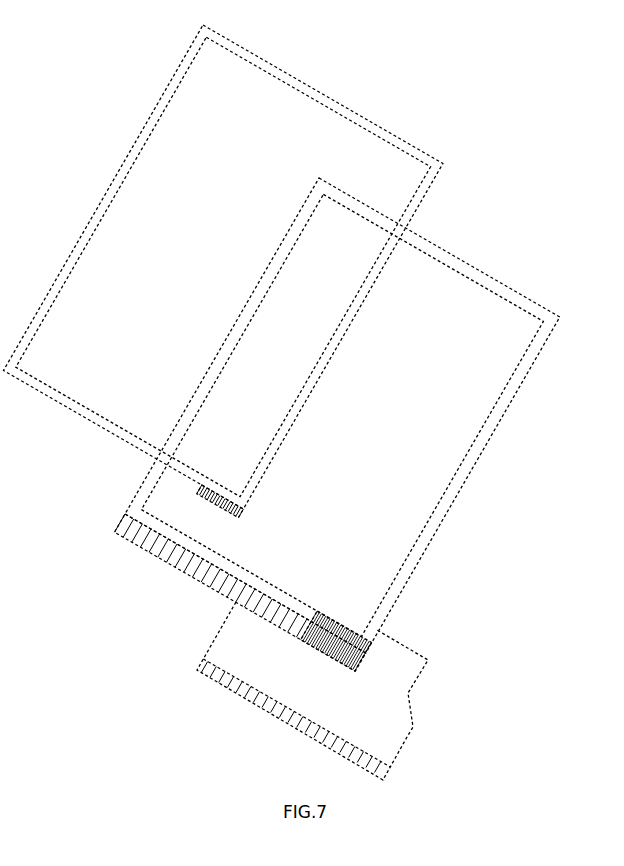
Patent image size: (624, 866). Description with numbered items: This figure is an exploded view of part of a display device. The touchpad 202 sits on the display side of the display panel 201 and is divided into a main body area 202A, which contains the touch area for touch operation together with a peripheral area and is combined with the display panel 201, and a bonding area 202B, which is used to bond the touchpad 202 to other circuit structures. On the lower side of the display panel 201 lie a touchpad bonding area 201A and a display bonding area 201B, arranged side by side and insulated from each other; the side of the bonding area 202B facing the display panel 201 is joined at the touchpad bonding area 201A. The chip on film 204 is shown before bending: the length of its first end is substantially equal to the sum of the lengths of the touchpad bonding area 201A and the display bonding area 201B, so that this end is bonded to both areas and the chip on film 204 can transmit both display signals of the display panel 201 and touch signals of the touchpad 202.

The display panel 201 is at (475, 278).
The touchpad bonding area 201A is at (353, 657).
The display bonding area 201B is at (145, 540).
The touchpad 202 is at (319, 100).
The main body area 202A is at (127, 195).
The bonding area 202B is at (205, 490).
The chip on film 204 is at (393, 735).